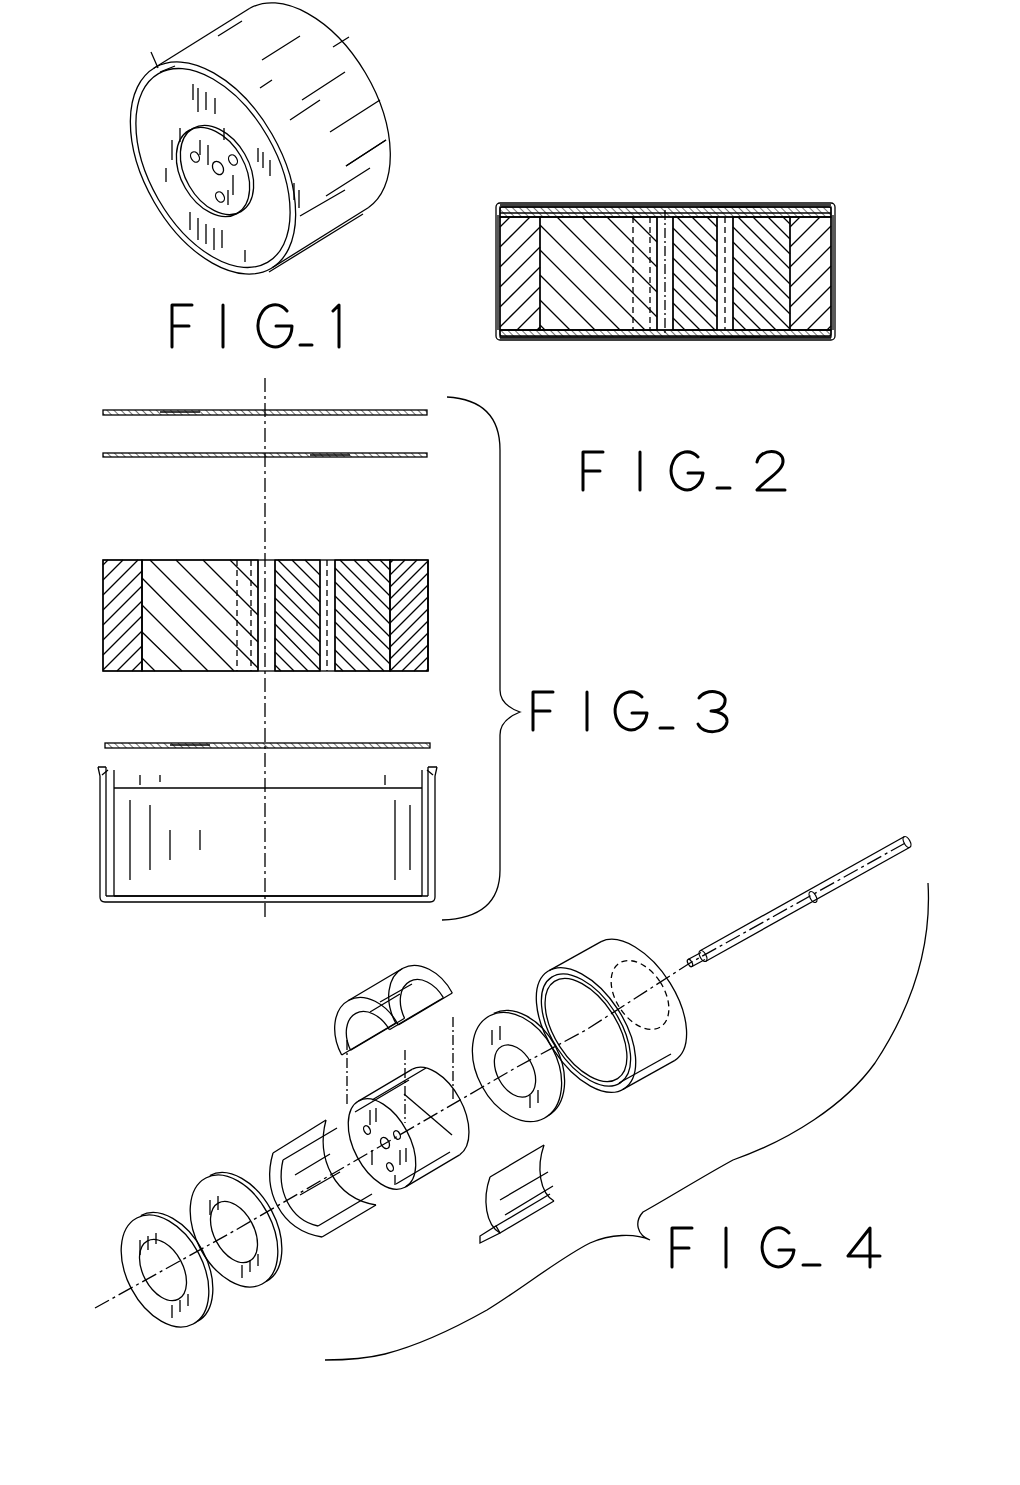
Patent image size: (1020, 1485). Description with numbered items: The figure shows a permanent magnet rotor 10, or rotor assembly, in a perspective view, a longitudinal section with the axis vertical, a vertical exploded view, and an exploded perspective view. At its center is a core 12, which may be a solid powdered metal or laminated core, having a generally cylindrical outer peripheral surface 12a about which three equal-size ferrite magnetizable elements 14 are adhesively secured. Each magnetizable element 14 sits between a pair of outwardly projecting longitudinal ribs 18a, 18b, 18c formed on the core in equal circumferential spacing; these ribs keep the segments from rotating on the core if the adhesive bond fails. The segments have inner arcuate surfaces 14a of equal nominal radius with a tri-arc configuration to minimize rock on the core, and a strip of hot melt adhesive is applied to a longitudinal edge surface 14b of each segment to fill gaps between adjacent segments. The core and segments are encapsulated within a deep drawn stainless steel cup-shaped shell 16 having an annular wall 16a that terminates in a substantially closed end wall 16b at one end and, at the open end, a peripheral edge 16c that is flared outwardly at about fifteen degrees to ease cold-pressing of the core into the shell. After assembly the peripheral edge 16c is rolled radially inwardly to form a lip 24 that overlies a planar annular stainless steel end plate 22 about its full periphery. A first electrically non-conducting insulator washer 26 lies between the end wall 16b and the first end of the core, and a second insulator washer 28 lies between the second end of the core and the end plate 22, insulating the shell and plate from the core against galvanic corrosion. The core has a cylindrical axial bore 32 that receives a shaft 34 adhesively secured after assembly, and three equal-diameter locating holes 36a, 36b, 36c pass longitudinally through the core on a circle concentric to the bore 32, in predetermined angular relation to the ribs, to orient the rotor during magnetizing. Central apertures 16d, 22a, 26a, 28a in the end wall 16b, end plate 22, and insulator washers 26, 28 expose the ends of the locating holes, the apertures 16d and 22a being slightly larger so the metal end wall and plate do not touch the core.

In FIG. 1, the permanent magnet rotor 10 is at (280, 153).
In FIG. 2, the permanent magnet rotor 10 is at (678, 271).
In FIG. 1, the core 12 is at (192, 176).
In FIG. 2, the core 12 is at (665, 267).
In FIG. 3, the core 12 is at (294, 588).
In FIG. 4, the core 12 is at (428, 1150).
In FIG. 3, the outer peripheral surface 12a is at (413, 573).
In FIG. 4, the outer peripheral surface 12a is at (457, 1130).
In FIG. 2, the magnetizable elements 14 is at (512, 263).
In FIG. 3, the magnetizable elements 14 is at (266, 615).
In FIG. 4, the magnetizable elements 14 is at (409, 1111).
In FIG. 3, the inner arcuate surfaces 14a is at (143, 637).
In FIG. 4, the inner arcuate surfaces 14a is at (367, 1022).
In FIG. 4, the longitudinal edge surface 14b is at (272, 1175).
In FIG. 1, the cup-shaped shell 16 is at (358, 121).
In FIG. 2, the cup-shaped shell 16 is at (702, 273).
In FIG. 3, the cup-shaped shell 16 is at (239, 846).
In FIG. 4, the cup-shaped shell 16 is at (613, 992).
In FIG. 1, the annular wall 16a is at (377, 168).
In FIG. 2, the annular wall 16a is at (838, 250).
In FIG. 3, the annular wall 16a is at (98, 862).
In FIG. 4, the annular wall 16a is at (617, 1014).
In FIG. 2, the end wall 16b is at (793, 333).
In FIG. 3, the end wall 16b is at (157, 902).
In FIG. 1, the peripheral edge 16c is at (213, 168).
In FIG. 2, the peripheral edge 16c is at (812, 200).
In FIG. 3, the peripheral edge 16c is at (98, 768).
In FIG. 4, the peripheral edge 16c is at (547, 977).
In FIG. 2, the central aperture 16d is at (583, 333).
In FIG. 3, the central aperture 16d is at (193, 900).
In FIG. 4, the central aperture 16d is at (628, 934).
In FIG. 4, the rib 18a is at (432, 1090).
In FIG. 4, the rib 18b is at (393, 1195).
In FIG. 4, the rib 18c is at (350, 1113).
In FIG. 1, the end plate 22 is at (158, 45).
In FIG. 2, the end plate 22 is at (665, 179).
In FIG. 3, the end plate 22 is at (265, 386).
In FIG. 4, the end plate 22 is at (155, 1267).
In FIG. 2, the central aperture 22a is at (773, 203).
In FIG. 3, the central aperture 22a is at (188, 412).
In FIG. 4, the central aperture 22a is at (127, 1240).
In FIG. 1, the lip 24 is at (173, 86).
In FIG. 2, the lip 24 is at (823, 200).
In FIG. 2, the first insulator washer 26 is at (665, 375).
In FIG. 3, the first insulator washer 26 is at (267, 721).
In FIG. 4, the first insulator washer 26 is at (537, 1057).
In FIG. 2, the central aperture 26a is at (727, 337).
In FIG. 3, the central aperture 26a is at (197, 745).
In FIG. 4, the central aperture 26a is at (498, 1045).
In FIG. 1, the second insulator washer 28 is at (192, 128).
In FIG. 2, the second insulator washer 28 is at (563, 213).
In FIG. 3, the second insulator washer 28 is at (265, 478).
In FIG. 4, the second insulator washer 28 is at (224, 1236).
In FIG. 3, the central aperture 28a is at (328, 460).
In FIG. 4, the central aperture 28a is at (210, 1205).
In FIG. 1, the axial bore 32 is at (218, 167).
In FIG. 2, the axial bore 32 is at (668, 220).
In FIG. 3, the axial bore 32 is at (270, 572).
In FIG. 4, the axial bore 32 is at (383, 1140).
In FIG. 4, the shaft 34 is at (843, 872).
In FIG. 1, the locating hole 36a is at (220, 140).
In FIG. 2, the locating hole 36a is at (725, 320).
In FIG. 3, the locating hole 36a is at (332, 567).
In FIG. 4, the locating hole 36a is at (397, 1133).
In FIG. 1, the locating hole 36b is at (217, 197).
In FIG. 4, the locating hole 36b is at (387, 1169).
In FIG. 1, the locating hole 36c is at (192, 157).
In FIG. 4, the locating hole 36c is at (367, 1128).